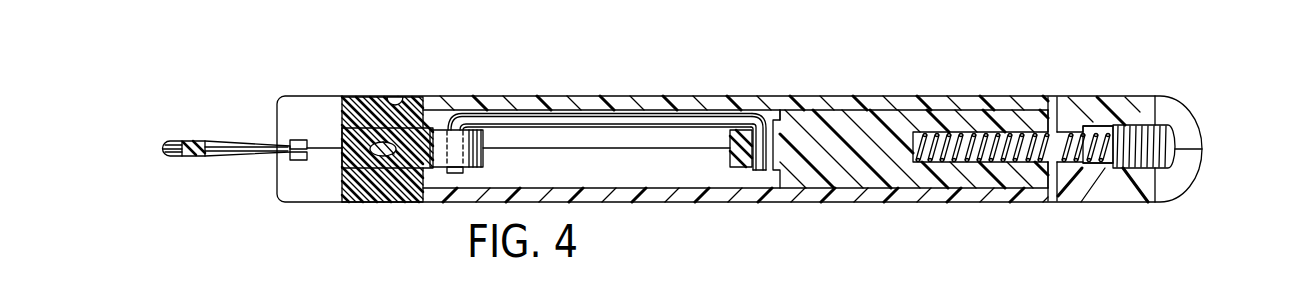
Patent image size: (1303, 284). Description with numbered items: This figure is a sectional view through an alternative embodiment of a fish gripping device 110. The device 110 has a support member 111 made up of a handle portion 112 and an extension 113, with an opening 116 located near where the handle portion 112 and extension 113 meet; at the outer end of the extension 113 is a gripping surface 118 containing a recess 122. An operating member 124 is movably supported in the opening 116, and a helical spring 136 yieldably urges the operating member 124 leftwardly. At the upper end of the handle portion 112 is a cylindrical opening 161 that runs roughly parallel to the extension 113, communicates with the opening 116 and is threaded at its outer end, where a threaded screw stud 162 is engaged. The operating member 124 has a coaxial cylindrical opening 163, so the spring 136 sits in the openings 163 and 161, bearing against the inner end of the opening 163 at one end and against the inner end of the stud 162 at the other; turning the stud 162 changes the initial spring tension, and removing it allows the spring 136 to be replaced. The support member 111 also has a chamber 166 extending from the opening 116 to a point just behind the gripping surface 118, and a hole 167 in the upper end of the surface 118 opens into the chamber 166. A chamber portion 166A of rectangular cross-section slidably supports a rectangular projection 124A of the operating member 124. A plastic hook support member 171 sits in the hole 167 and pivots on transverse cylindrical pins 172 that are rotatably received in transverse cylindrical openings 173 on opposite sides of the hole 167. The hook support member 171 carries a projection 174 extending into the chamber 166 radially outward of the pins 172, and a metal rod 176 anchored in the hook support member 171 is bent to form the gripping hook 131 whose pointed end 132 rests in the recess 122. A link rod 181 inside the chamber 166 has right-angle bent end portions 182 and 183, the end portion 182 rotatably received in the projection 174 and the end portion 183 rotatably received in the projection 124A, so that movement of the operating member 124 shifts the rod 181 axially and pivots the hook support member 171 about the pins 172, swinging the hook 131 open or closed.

The fish gripping device 110 is at (855, 70).
The support member 111 is at (902, 84).
The handle portion 112 is at (1130, 103).
The extension 113 is at (610, 197).
The opening 116 is at (1053, 106).
The gripping surface 118 is at (305, 110).
The recess 122 is at (298, 162).
The operating member 124 is at (840, 170).
The rectangular projection 124A is at (813, 127).
The gripping hook 131 is at (162, 145).
The pointed end 132 is at (290, 148).
The helical spring 136 is at (997, 130).
The cylindrical opening 161 is at (1092, 125).
The threaded screw stud 162 is at (1153, 137).
The cylindrical opening 163 is at (962, 132).
The chamber 166 is at (645, 167).
The chamber portion 166A is at (763, 110).
The hole 167 is at (343, 140).
The hook support member 171 is at (347, 153).
The cylindrical pins 172 is at (380, 110).
The transverse cylindrical openings 173 is at (390, 95).
The projection 174 is at (485, 155).
The metal rod 176 is at (190, 142).
The link rod 181 is at (593, 117).
The end portion 182 is at (455, 172).
The end portion 183 is at (755, 170).